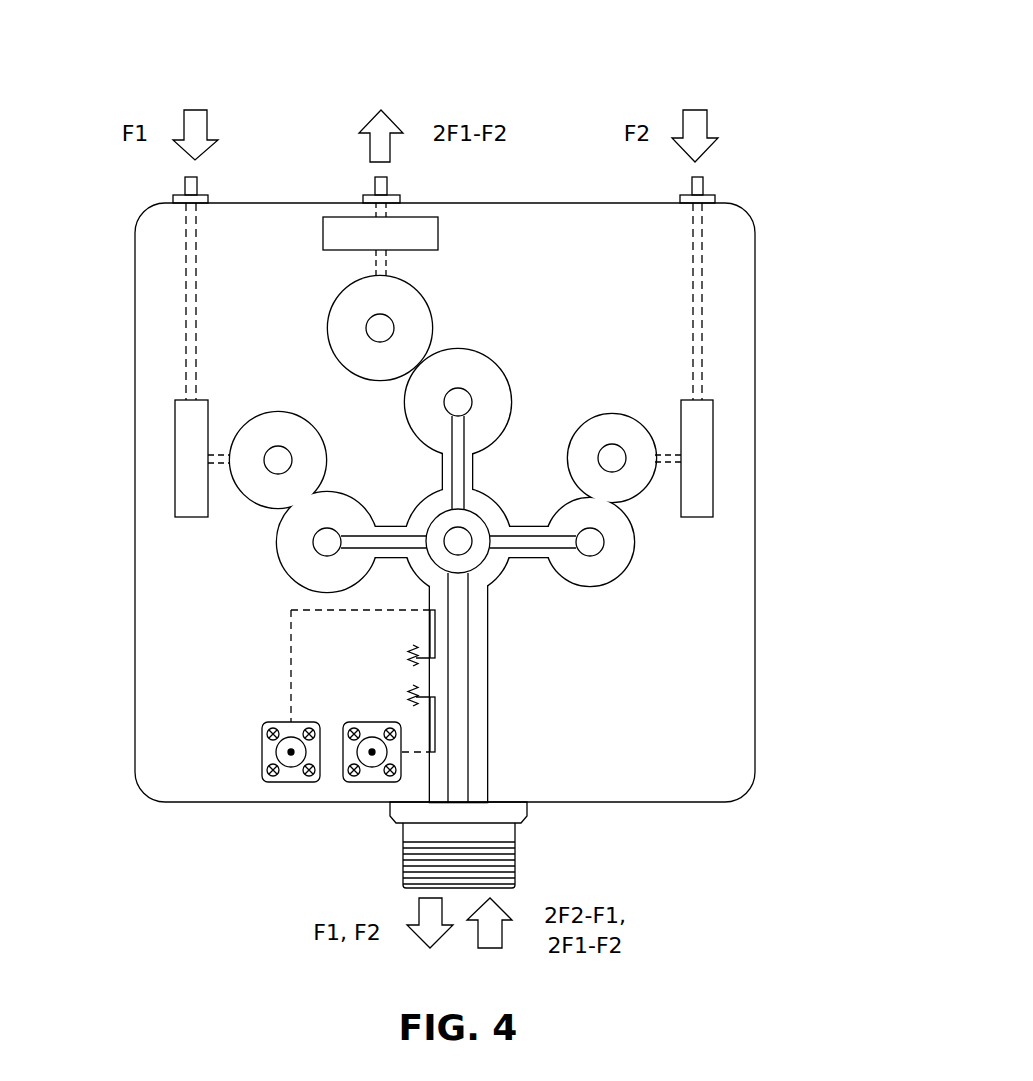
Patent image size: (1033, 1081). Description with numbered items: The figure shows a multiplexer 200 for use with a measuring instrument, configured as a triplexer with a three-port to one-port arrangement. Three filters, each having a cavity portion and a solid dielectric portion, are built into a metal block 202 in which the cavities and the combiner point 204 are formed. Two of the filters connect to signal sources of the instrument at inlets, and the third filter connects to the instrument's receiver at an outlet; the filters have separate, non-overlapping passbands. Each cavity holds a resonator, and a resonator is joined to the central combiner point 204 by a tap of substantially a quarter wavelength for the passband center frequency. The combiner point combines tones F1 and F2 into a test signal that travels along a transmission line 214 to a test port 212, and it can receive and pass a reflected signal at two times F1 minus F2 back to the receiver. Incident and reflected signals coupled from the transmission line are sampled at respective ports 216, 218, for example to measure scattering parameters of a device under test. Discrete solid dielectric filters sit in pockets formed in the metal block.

The multiplexer 200 is at (734, 55).
The metal block 202 is at (613, 267).
The central hub / combining node 204 is at (460, 542).
The test port 212 is at (540, 850).
The transmission line 214 is at (460, 775).
The port 216 is at (232, 776).
The port 218 is at (325, 808).